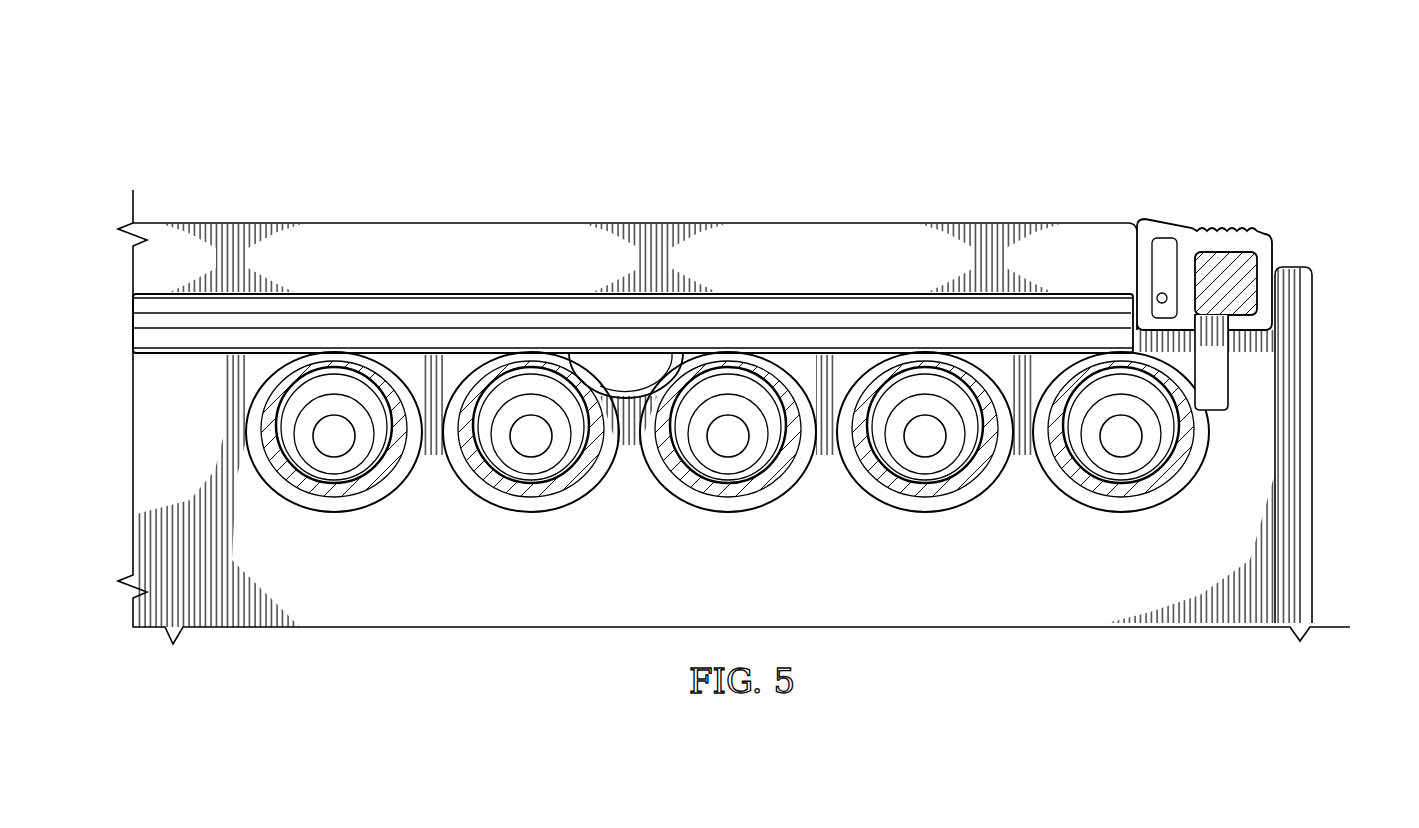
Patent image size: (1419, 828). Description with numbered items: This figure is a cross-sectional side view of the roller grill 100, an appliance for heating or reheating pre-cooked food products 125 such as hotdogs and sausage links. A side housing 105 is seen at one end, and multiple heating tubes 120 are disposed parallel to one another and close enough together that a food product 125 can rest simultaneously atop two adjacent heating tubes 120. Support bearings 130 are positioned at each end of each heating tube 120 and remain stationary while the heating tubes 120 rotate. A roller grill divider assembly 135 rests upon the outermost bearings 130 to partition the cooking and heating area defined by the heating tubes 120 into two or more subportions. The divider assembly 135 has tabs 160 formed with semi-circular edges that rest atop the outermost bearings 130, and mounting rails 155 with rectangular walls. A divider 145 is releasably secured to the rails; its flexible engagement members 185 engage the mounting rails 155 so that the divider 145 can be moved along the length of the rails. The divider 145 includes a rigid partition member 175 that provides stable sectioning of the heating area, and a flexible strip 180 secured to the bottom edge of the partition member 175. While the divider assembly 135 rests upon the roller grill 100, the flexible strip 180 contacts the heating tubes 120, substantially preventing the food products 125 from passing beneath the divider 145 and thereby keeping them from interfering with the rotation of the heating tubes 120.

The roller grill 100 is at (1080, 95).
The side housing 105 is at (1313, 512).
The heating tube 120 is at (1131, 442).
The pre-cooked food product 125 is at (622, 400).
The support bearing 130 is at (1195, 485).
The roller grill divider assembly 135 is at (975, 162).
The divider 145 is at (858, 220).
The mounting rail 155 is at (1258, 264).
The tab 160 is at (1228, 368).
The partition member 175 is at (510, 222).
The flexible strip 180 is at (420, 292).
The engagement member 185 is at (1222, 218).